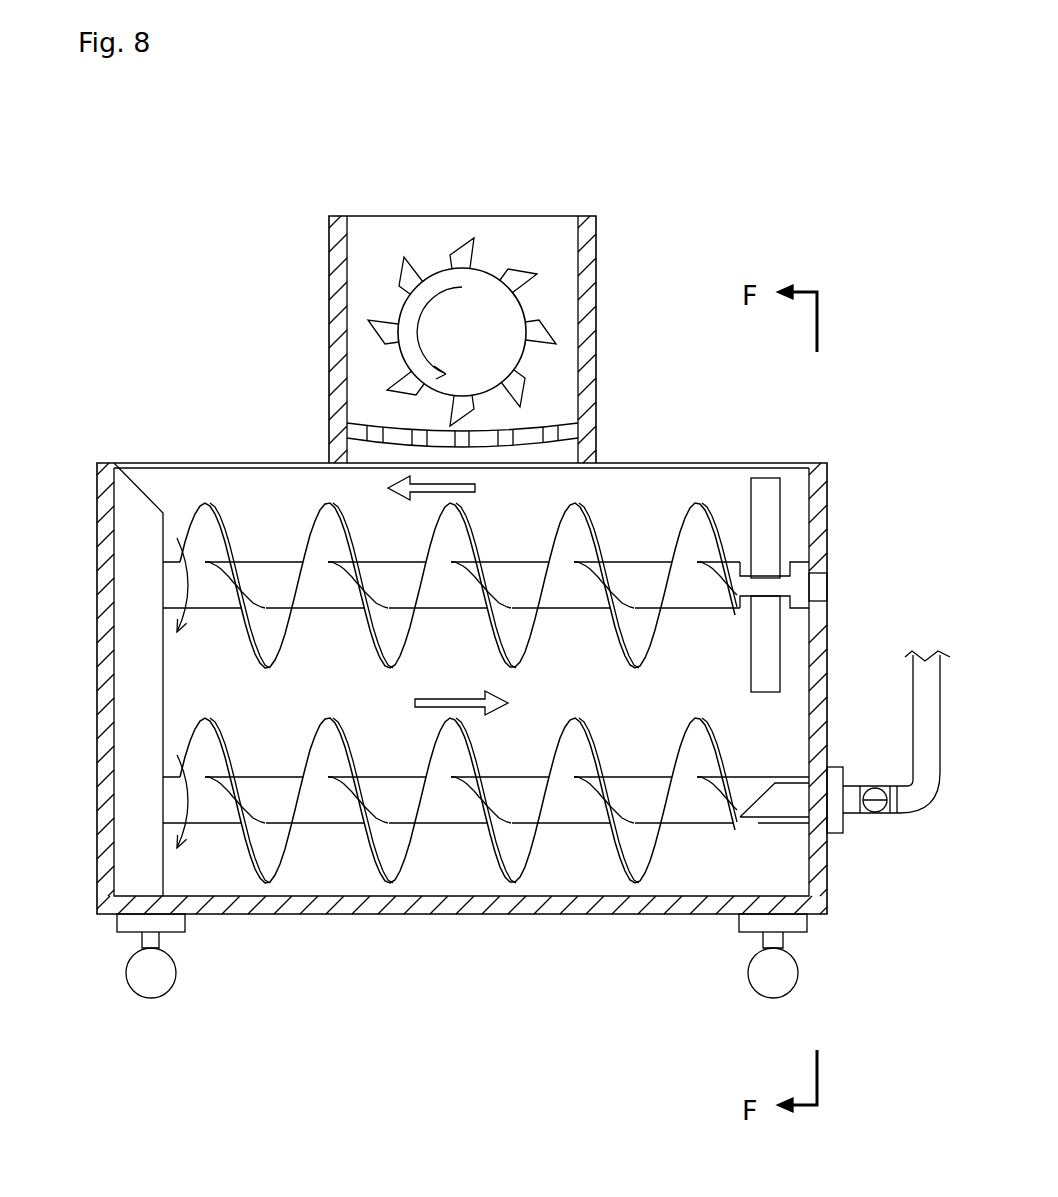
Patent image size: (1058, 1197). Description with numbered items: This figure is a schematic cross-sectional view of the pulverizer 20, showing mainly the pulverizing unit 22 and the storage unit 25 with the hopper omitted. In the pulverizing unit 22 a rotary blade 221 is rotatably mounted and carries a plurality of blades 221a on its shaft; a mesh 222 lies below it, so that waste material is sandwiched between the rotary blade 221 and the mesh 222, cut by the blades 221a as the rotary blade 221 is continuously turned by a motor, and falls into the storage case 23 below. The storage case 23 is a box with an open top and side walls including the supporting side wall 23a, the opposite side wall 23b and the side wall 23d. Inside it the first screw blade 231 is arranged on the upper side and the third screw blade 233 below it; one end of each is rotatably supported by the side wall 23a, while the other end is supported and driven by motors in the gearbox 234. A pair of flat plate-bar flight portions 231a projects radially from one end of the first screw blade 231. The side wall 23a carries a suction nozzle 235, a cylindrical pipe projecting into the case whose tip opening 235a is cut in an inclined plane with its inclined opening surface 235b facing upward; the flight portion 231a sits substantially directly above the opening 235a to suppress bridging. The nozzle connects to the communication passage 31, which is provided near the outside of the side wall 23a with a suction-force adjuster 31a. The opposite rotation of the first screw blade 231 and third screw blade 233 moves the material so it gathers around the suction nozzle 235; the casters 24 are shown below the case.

The pulverizer 20 is at (691, 226).
The pulverizing unit 22 is at (304, 194).
The rotary blade 221 is at (386, 301).
The blades 221a is at (462, 256).
The mesh 222 is at (359, 431).
The storage case 23 is at (840, 455).
The side wall 23a is at (818, 503).
The side wall 23b is at (106, 503).
The side wall 23d is at (623, 461).
The first screw blade 231 is at (628, 538).
The flight portion 231a is at (767, 500).
The third screw blade 233 is at (572, 834).
The gearbox 234 is at (136, 508).
The suction nozzle 235 is at (775, 806).
The opening 235a is at (738, 804).
The inclined opening surface 235b is at (762, 789).
The caster 24 is at (783, 975).
The storage unit 25 is at (838, 541).
The communication passage 31 is at (932, 703).
The suction-force adjuster 31a is at (876, 819).